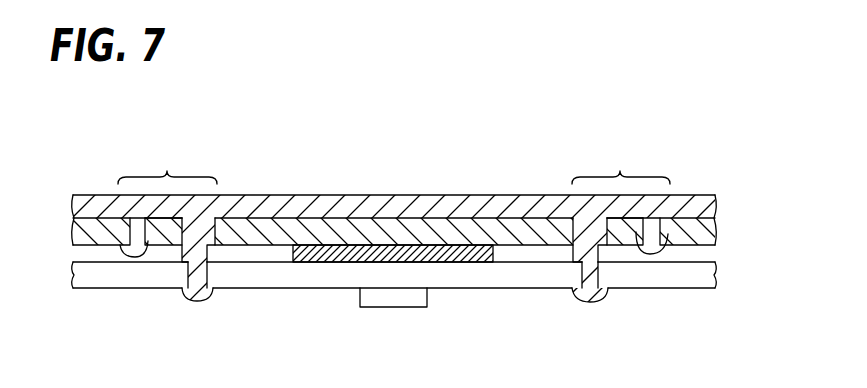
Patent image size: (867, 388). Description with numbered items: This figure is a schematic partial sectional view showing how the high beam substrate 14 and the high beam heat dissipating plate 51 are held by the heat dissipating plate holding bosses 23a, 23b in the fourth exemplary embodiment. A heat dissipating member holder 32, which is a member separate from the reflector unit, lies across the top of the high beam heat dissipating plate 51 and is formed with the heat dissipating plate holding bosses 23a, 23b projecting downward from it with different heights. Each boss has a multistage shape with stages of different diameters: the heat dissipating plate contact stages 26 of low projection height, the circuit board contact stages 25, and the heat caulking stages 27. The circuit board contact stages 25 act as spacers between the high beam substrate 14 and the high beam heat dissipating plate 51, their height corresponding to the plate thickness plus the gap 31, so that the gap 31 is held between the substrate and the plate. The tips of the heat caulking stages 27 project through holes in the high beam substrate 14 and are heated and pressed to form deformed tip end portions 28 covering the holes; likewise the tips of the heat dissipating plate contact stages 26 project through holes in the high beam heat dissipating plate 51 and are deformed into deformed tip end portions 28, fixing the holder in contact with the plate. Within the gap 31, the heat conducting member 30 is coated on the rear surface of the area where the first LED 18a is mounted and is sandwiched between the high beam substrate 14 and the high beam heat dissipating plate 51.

The high beam substrate 14 is at (712, 270).
The first LED 18a is at (395, 300).
The heat dissipating plate holding boss 23a is at (167, 159).
The heat dissipating plate holding boss 23b is at (621, 159).
The circuit board contact stage 25 is at (213, 248).
The heat dissipating plate contact stage 26 is at (140, 223).
The heat caulking stage 27 is at (200, 270).
The deformed tip end portion 28 is at (128, 258).
The heat conducting member 30 is at (451, 247).
The gap 31 is at (90, 258).
The heat dissipating member holder 32 is at (322, 207).
The high beam heat dissipating plate 51 is at (712, 230).